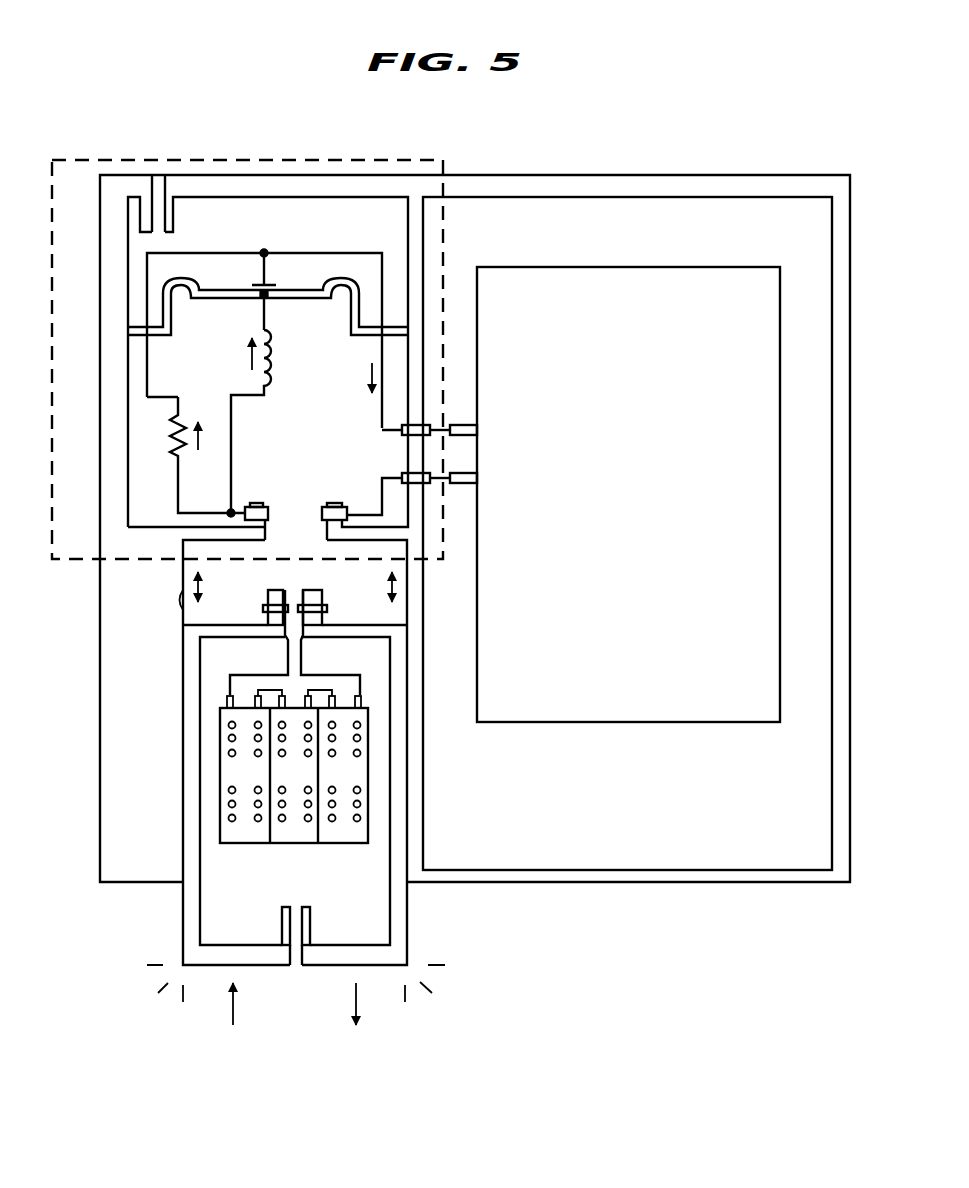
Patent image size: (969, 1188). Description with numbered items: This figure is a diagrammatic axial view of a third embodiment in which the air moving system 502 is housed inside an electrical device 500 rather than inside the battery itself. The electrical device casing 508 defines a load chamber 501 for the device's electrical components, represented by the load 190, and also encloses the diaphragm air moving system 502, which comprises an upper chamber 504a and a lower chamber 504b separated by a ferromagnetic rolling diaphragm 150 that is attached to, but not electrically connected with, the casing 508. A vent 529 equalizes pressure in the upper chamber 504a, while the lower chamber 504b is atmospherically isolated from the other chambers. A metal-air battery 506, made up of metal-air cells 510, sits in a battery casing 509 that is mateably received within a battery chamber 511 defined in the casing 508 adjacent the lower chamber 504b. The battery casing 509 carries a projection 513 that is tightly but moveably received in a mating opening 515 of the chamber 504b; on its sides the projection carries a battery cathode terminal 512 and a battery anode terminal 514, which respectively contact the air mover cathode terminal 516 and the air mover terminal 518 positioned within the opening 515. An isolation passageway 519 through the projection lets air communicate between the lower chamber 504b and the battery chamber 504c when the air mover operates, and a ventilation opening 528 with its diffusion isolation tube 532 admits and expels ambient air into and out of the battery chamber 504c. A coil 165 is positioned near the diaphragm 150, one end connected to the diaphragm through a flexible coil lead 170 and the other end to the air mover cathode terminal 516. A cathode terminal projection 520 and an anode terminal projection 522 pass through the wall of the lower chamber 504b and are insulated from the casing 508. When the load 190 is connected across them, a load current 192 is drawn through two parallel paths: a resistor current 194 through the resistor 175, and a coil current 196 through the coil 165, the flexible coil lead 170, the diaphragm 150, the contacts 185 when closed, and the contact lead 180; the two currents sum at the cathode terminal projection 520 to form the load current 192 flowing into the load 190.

The electrical device 500 is at (754, 108).
The load chamber 501 is at (645, 825).
The diaphragm air moving system 502 is at (47, 540).
The upper chamber 504a is at (247, 237).
The lower chamber 504b is at (318, 461).
The battery chamber 504c is at (272, 671).
The metal-air battery 506 is at (229, 852).
The electrical device casing 508 is at (852, 307).
The battery casing 509 is at (407, 938).
The metal-air cells 510 is at (248, 843).
The battery chamber 511 is at (182, 605).
The battery cathode terminal 512 is at (257, 605).
The projection 513 is at (327, 618).
The battery anode terminal 514 is at (362, 592).
The mating opening 515 is at (297, 534).
The air mover cathode terminal 516 is at (243, 498).
The air mover cathode terminal 518 is at (350, 500).
The isolation passageway 519 is at (294, 598).
The cathode terminal projection 520 is at (434, 412).
The anode terminal projection 522 is at (434, 493).
The ventilation opening 528 is at (295, 967).
The vent 529 is at (150, 218).
The diffusion isolation tube 532 is at (310, 928).
The ferromagnetic rolling diaphragm 150 is at (287, 300).
The coil 165 is at (272, 353).
The flexible coil lead 170 is at (262, 310).
The resistor 175 is at (172, 437).
The contact lead 180 is at (333, 250).
The contacts 185 is at (270, 283).
The load 190 is at (650, 495).
The load current 192 is at (370, 386).
The resistor current 194 is at (203, 442).
The coil current 196 is at (250, 362).